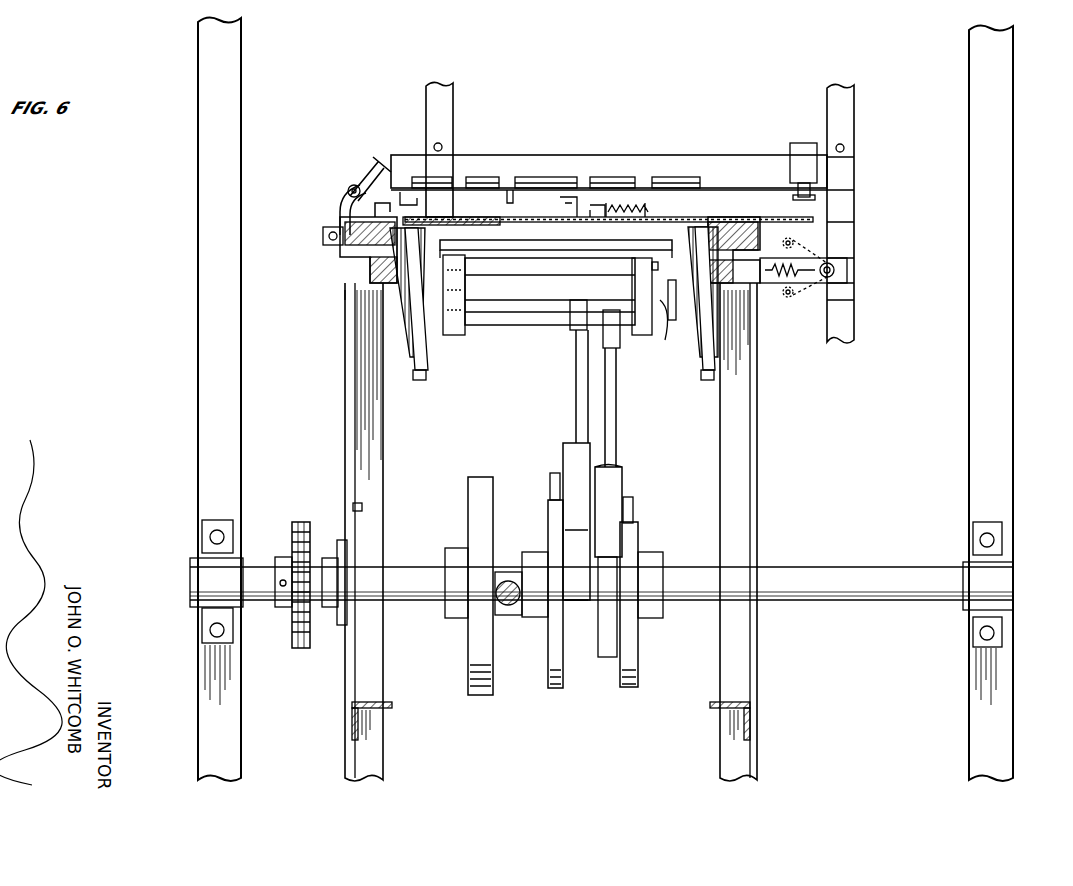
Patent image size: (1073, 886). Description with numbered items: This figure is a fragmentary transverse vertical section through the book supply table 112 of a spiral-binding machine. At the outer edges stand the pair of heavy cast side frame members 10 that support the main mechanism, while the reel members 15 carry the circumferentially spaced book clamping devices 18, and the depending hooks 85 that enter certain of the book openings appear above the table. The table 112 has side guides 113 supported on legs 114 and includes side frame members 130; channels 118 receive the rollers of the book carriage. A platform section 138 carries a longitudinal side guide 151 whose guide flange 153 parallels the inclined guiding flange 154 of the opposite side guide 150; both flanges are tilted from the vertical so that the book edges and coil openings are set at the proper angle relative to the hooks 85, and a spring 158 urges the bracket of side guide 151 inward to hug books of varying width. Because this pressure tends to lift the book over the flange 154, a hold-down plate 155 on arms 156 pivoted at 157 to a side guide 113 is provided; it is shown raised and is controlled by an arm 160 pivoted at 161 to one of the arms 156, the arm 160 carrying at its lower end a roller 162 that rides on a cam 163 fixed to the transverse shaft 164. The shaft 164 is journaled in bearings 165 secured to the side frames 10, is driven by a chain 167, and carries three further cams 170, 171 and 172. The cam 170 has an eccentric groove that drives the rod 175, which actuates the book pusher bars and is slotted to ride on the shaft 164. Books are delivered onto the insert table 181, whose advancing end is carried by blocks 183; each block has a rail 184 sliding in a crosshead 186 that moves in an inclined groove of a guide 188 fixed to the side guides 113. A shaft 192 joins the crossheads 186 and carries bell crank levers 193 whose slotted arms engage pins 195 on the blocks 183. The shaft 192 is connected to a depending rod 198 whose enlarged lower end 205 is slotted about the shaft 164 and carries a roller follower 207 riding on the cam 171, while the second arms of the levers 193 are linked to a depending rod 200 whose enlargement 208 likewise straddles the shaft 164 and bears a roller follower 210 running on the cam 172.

The side frame members 10 is at (200, 302).
The reel members 15 is at (445, 130).
The book clamping device 18 is at (754, 141).
The hooks 85 is at (511, 194).
The book supply table 112 is at (325, 165).
The side guides 113 is at (372, 268).
The legs 114 is at (345, 428).
The channels 118 is at (360, 255).
The side frame members 130 is at (393, 706).
The platform section 138 is at (660, 218).
The longitudinal side guide 150 is at (372, 195).
The longitudinal side guide 151 is at (582, 195).
The guide flange 153 is at (562, 200).
The guiding flange 154 is at (410, 196).
The hold-down plate 155 is at (384, 200).
The arms 156 is at (338, 218).
The pivot 157 is at (323, 236).
The spring 158 is at (636, 208).
The arm 160 is at (347, 295).
The pivot 161 is at (347, 190).
The roller 162 is at (355, 505).
The cam 163 is at (343, 630).
The transverse shaft 164 is at (402, 578).
The bearings 165 is at (228, 555).
The chain 167 is at (292, 640).
The cam 170 is at (483, 477).
The cam 171 is at (550, 528).
The cam 172 is at (640, 536).
The rod 175 is at (508, 606).
The insert table 181 is at (474, 217).
The blocks 183 is at (455, 252).
The rail 184 is at (672, 322).
The crosshead 186 is at (421, 380).
The guides 188 is at (400, 320).
The shaft 192 is at (520, 312).
The bell crank lever 193 is at (462, 336).
The pin 195 is at (632, 272).
The depending rod 198 is at (572, 372).
The depending rod 200 is at (614, 452).
The enlarged lower end 205 is at (566, 452).
The roller follower 207 is at (553, 478).
The enlarged lower end 208 is at (618, 475).
The roller follower 210 is at (633, 503).